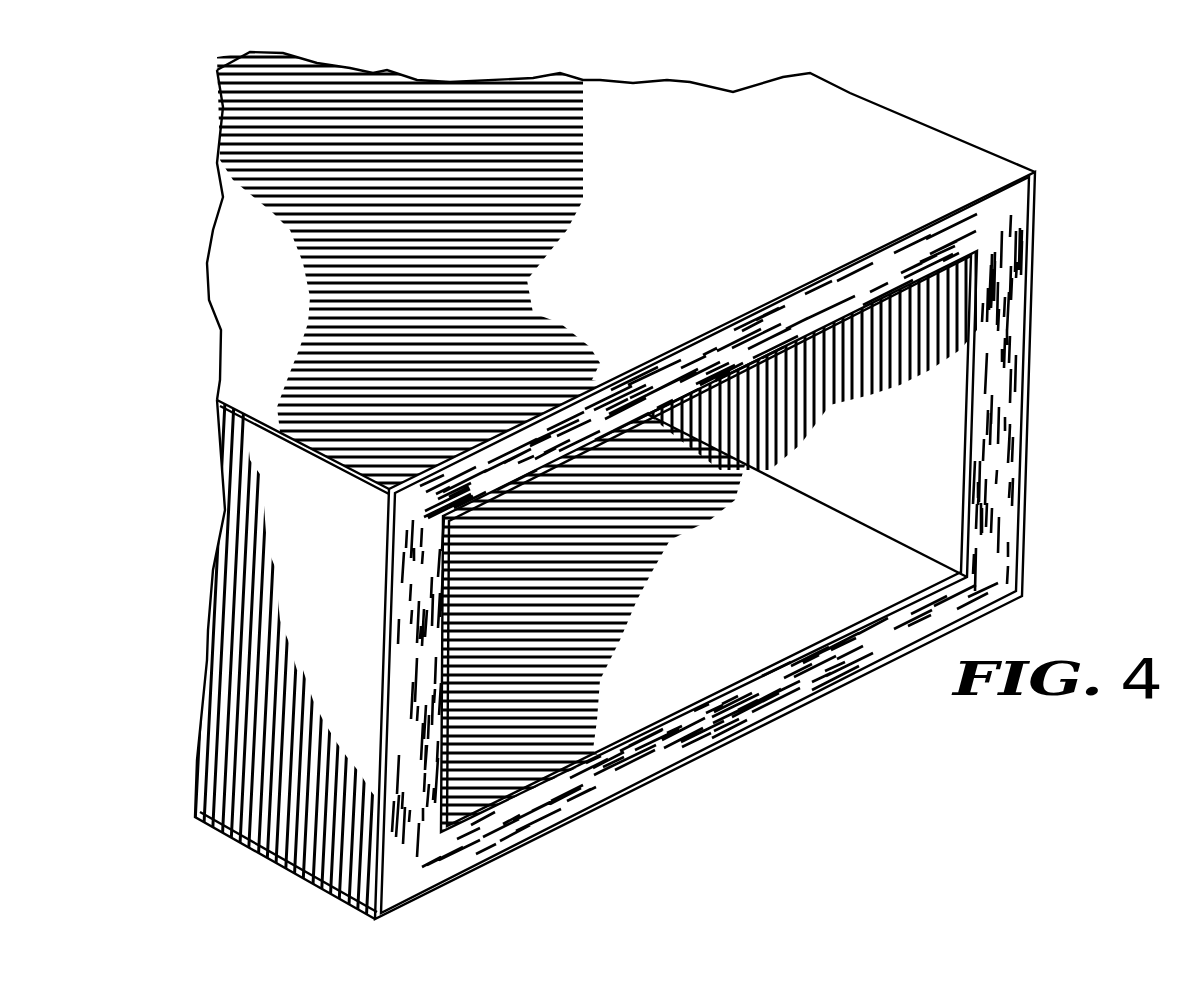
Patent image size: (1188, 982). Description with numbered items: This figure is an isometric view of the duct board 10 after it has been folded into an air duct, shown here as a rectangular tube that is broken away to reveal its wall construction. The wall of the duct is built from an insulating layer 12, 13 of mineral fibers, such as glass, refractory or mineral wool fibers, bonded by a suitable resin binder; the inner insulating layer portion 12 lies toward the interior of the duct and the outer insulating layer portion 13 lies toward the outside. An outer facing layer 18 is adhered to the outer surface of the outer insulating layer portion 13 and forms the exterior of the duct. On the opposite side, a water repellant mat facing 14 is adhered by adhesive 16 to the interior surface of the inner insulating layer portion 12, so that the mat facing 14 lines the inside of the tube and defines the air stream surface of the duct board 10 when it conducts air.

The duct board or duct liner material 10 is at (659, 471).
The inner insulating layer portion 12 is at (617, 758).
The outer insulating layer portion 13 is at (792, 692).
The water repellant mat facing 14 is at (798, 578).
The adhesive 16 is at (842, 655).
The outer facing layer 18 is at (830, 143).